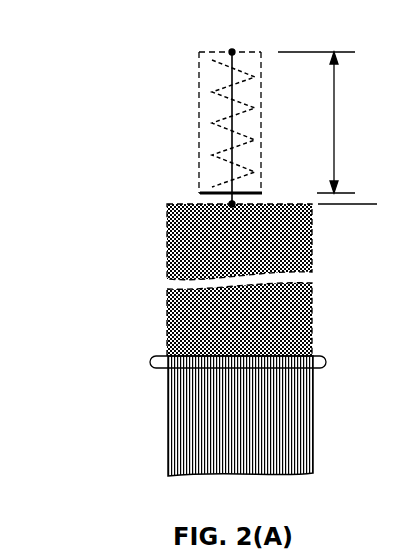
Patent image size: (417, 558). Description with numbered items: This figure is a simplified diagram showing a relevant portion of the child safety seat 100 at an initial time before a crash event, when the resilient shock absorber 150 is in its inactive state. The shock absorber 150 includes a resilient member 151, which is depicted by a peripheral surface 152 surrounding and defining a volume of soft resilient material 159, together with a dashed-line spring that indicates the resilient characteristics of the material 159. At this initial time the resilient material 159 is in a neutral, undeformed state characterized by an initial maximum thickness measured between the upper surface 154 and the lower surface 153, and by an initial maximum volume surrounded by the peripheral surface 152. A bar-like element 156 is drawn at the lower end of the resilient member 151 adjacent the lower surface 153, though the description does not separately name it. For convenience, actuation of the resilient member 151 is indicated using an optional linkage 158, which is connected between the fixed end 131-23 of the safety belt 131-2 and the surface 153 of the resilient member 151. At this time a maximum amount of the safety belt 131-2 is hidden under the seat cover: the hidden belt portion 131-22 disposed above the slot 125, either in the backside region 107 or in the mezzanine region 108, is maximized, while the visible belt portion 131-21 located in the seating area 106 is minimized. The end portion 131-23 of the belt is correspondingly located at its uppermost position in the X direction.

The child safety seat 100 is at (118, 103).
The resilient shock absorber 150 is at (158, 142).
The resilient member 151 is at (193, 103).
The peripheral surface 152 is at (199, 128).
The lower surface (second portion) of resilient member 153 is at (235, 192).
The upper surface of resilient member 154 is at (232, 53).
The tip end bar 156 is at (203, 190).
The optional linkage 158 is at (230, 78).
The resilient material 159 is at (262, 55).
The safety belt 131-2 is at (318, 440).
The fixed end of safety belt 131-23 is at (167, 205).
The hidden belt portion 131-22 is at (163, 280).
The visible belt portion 131-21 is at (167, 440).
The backside region 107 is at (182, 275).
The mezzanine region 108 is at (142, 316).
The seating area 106 is at (153, 414).
The slot 125 is at (327, 368).